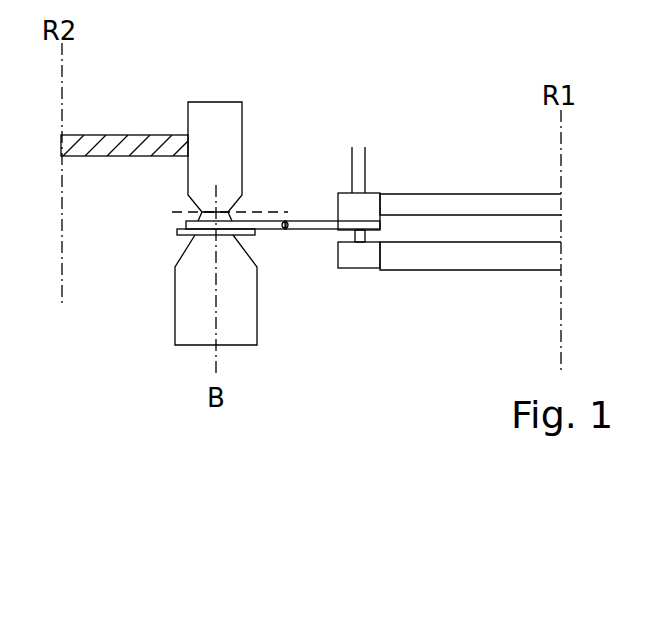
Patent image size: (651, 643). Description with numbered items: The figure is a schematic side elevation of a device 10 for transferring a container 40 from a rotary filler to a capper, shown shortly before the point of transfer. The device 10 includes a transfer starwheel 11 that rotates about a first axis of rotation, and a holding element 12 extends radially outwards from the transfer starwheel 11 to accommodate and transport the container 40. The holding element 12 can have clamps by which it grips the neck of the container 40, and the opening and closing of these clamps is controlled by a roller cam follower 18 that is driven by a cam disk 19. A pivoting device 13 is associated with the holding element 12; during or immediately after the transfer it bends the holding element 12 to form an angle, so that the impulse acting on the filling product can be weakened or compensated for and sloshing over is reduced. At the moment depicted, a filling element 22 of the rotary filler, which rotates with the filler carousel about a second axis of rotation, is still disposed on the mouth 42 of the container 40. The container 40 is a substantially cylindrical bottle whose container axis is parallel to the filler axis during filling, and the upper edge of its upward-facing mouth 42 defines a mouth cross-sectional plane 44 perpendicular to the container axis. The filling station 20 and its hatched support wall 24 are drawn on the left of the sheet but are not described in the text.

The device 10 is at (426, 82).
The transfer starwheel 11 is at (453, 202).
The holding element 12 is at (302, 230).
The pivoting device 13 is at (286, 221).
The roller cam follower 18 is at (363, 268).
The cam disk 19 is at (468, 270).
The filling station 20 is at (140, 72).
The filling element 22 is at (223, 118).
The support wall 24 is at (110, 147).
The container 40 is at (190, 297).
The mouth 42 is at (203, 216).
The mouth cross-sectional plane 44 is at (182, 211).